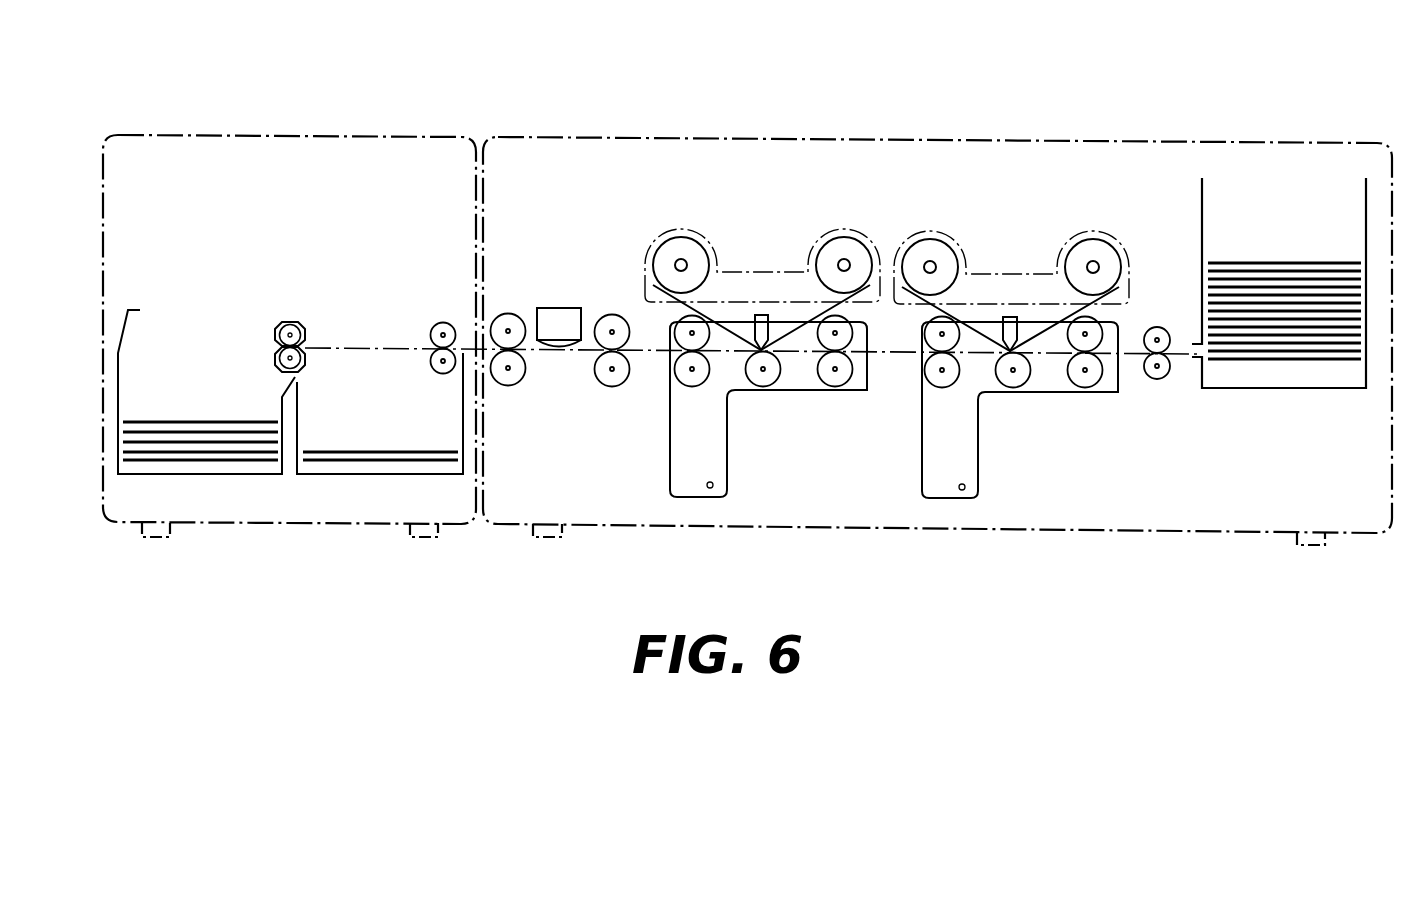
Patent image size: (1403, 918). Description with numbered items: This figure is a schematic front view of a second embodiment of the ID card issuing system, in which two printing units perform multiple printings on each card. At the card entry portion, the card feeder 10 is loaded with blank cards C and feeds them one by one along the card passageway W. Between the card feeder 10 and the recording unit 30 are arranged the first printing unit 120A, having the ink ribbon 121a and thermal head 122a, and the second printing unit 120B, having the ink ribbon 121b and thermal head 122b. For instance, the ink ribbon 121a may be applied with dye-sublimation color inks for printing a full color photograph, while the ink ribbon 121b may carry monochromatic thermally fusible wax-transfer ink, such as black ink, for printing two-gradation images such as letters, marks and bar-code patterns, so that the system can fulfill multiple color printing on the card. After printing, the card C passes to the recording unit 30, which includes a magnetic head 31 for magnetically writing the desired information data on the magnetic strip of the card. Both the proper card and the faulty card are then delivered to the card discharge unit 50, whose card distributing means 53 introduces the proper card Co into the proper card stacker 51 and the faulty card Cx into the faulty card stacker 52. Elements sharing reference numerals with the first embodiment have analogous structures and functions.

The card feeder 10 is at (1279, 263).
The recording unit 30 is at (577, 218).
The magnetic head 31 is at (560, 322).
The card discharge unit 50 is at (260, 208).
The proper card stacker 51 is at (199, 394).
The faulty card stacker 52 is at (367, 426).
The card distributing means 53 is at (275, 331).
The first printing unit 120A is at (1011, 263).
The second printing unit 120B is at (762, 263).
The ink ribbon 121a is at (955, 322).
The ink ribbon 121b is at (703, 322).
The thermal head 122a is at (1012, 316).
The thermal head 122b is at (763, 317).
The card C is at (1288, 362).
The proper card Co is at (208, 456).
The faulty card Cx is at (397, 463).
The card passageway W is at (563, 351).